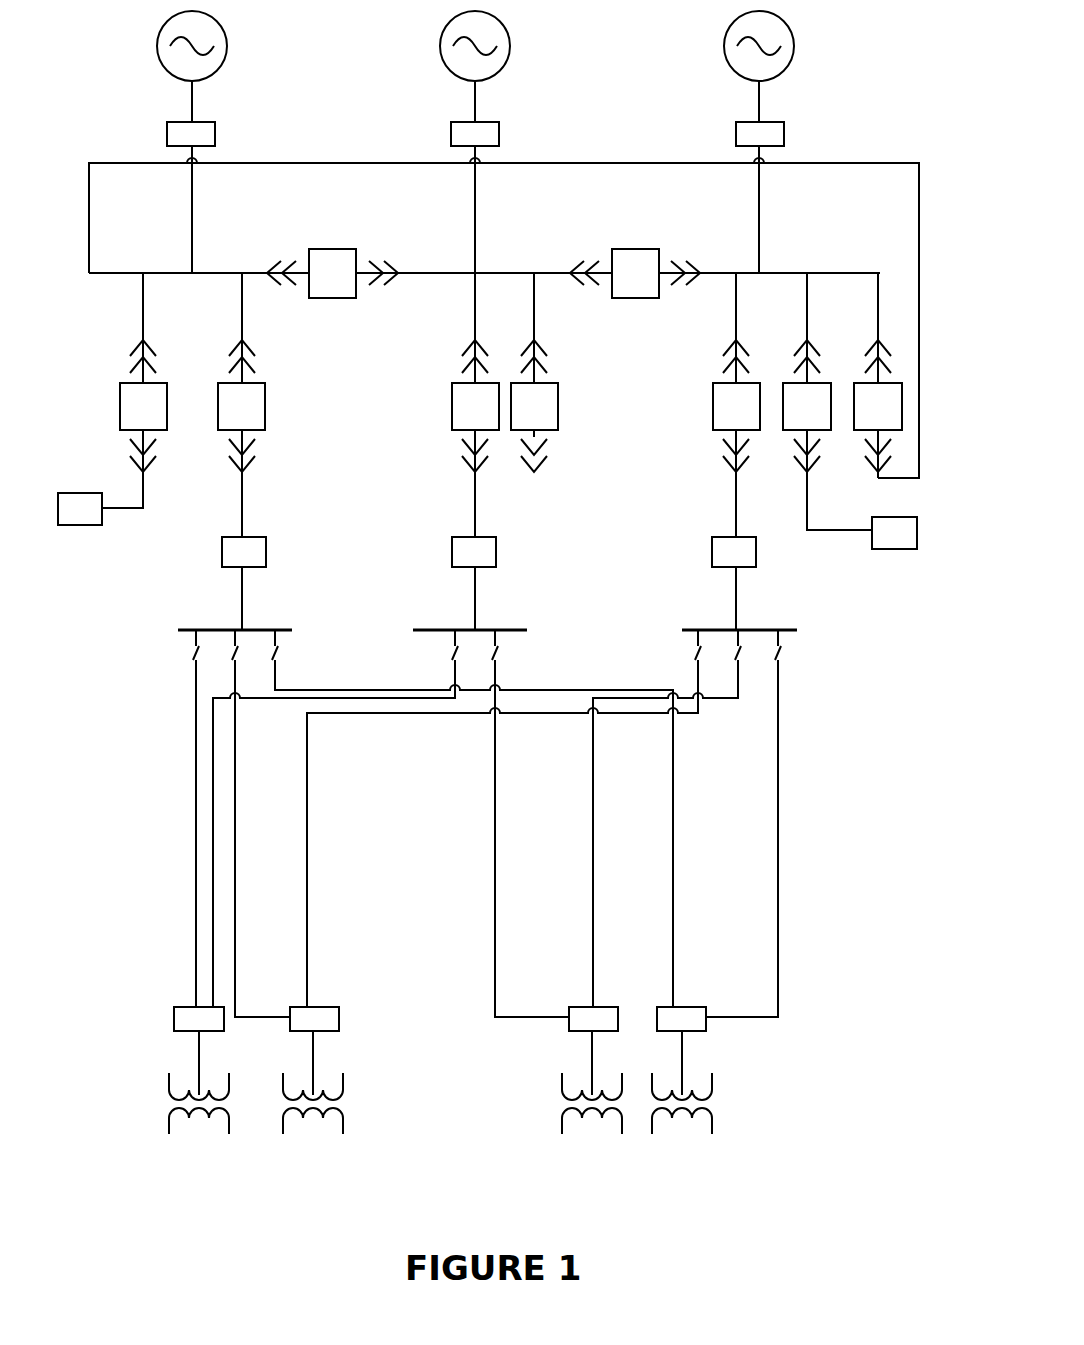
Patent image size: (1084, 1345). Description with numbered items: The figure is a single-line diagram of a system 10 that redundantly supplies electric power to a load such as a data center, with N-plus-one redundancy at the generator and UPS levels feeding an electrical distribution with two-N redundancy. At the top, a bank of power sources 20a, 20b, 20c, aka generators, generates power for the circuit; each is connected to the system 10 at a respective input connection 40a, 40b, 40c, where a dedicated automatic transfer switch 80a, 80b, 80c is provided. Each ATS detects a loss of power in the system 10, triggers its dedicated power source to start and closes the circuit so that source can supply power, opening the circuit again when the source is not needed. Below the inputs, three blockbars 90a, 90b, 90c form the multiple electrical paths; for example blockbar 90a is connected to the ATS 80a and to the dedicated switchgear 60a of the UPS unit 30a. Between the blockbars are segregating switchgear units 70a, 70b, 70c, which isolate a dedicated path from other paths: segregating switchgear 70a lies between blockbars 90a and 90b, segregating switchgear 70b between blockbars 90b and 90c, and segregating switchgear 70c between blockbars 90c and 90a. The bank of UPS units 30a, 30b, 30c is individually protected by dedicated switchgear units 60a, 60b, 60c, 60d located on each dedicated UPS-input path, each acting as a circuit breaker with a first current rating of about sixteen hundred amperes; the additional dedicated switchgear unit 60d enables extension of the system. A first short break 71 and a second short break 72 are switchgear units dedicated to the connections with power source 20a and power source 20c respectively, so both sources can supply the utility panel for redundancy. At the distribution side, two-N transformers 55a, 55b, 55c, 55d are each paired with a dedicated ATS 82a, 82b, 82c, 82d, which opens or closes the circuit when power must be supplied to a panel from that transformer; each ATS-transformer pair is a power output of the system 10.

The system 10 is at (872, 983).
The power source 20a is at (160, 83).
The power source 20b is at (445, 83).
The power source 20c is at (730, 83).
The UPS unit 30a is at (217, 567).
The UPS unit 30b is at (450, 563).
The UPS unit 30c is at (710, 563).
The input connection 40a is at (195, 168).
The input connection 40b is at (472, 168).
The input connection 40c is at (762, 180).
The transformer 55a is at (156, 1131).
The transformer 55b is at (280, 1160).
The transformer 55c is at (550, 1122).
The transformer 55d is at (650, 1158).
The dedicated switchgear unit 60a is at (267, 406).
The dedicated switchgear unit 60b is at (450, 432).
The dedicated switchgear unit 60c is at (710, 425).
The dedicated switchgear unit 60d is at (560, 413).
The segregating switchgear unit 70a is at (327, 248).
The segregating switchgear unit 70b is at (630, 248).
The segregating switchgear unit 70c is at (866, 380).
The first short break 71 is at (118, 405).
The second short break 72 is at (788, 432).
The automatic transfer switch 80a is at (164, 143).
The automatic transfer switch 80b is at (505, 133).
The automatic transfer switch 80c is at (787, 133).
The automatic transfer switch 82a is at (173, 1010).
The automatic transfer switch 82b is at (323, 1004).
The automatic transfer switch 82c is at (573, 1003).
The automatic transfer switch 82d is at (697, 1003).
The blockbar 90a is at (216, 262).
The blockbar 90b is at (500, 262).
The blockbar 90c is at (786, 262).